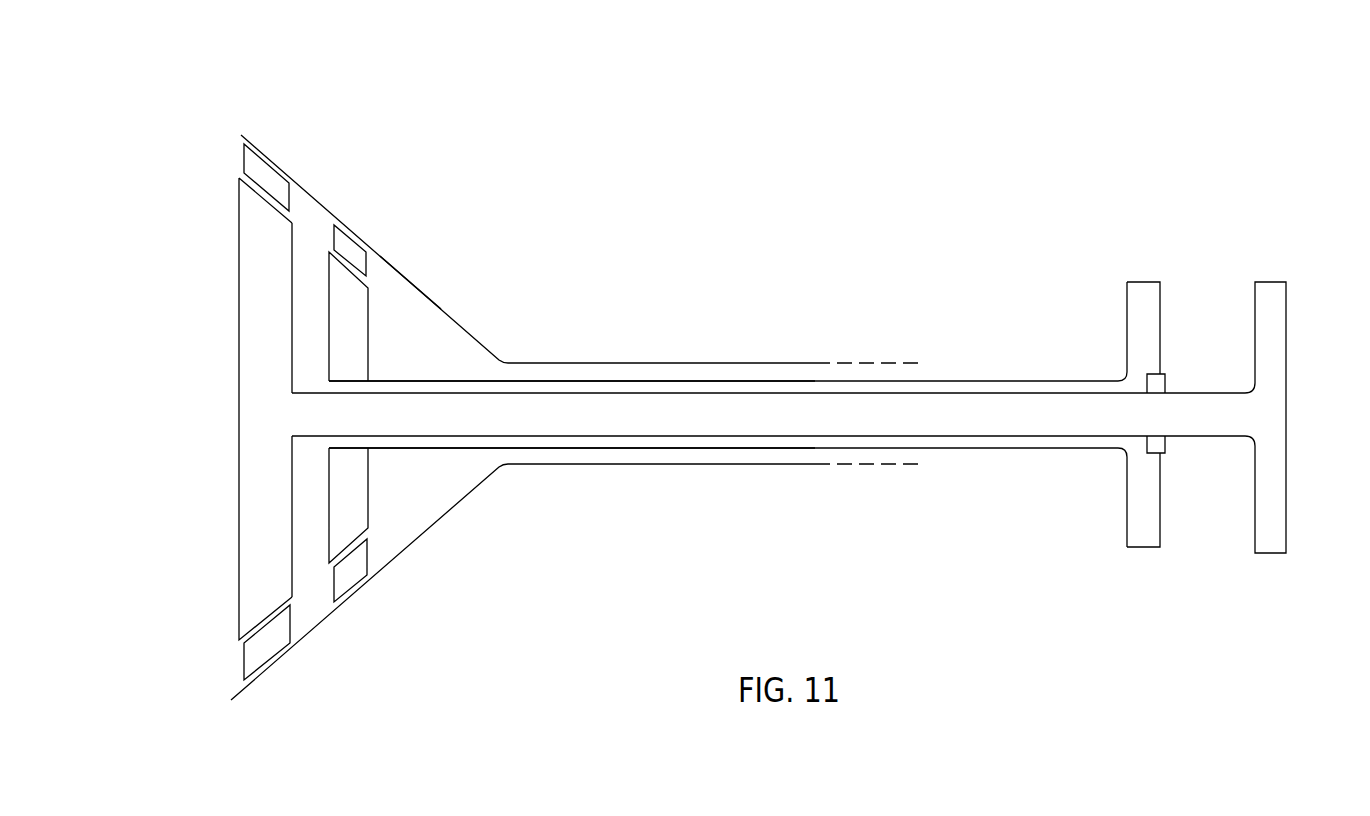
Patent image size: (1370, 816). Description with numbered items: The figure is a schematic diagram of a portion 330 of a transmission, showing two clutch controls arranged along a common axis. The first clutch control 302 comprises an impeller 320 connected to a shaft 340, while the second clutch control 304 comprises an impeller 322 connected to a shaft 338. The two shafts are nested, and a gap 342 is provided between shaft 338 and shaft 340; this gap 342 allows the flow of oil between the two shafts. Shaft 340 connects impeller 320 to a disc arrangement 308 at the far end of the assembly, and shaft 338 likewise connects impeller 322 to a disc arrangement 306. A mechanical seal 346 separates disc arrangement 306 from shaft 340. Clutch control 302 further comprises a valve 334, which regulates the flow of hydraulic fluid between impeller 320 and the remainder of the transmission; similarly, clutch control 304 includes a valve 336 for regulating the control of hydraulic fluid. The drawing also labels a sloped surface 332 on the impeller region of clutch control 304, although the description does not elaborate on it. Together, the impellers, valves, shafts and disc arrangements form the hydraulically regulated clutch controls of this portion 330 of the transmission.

The clutch control 302 is at (204, 122).
The clutch control 304 is at (335, 190).
The disc arrangement 306 is at (1105, 292).
The disc arrangement 308 is at (1293, 290).
The impeller 320 is at (248, 230).
The impeller 322 is at (357, 310).
The portion of the transmission 330 is at (607, 182).
The sloped surface 332 is at (441, 311).
The valve 334 is at (278, 180).
The valve 336 is at (345, 245).
The shaft 338 is at (572, 382).
The shaft 340 is at (583, 436).
The gap 342 is at (667, 392).
The mechanical seal 346 is at (1160, 385).